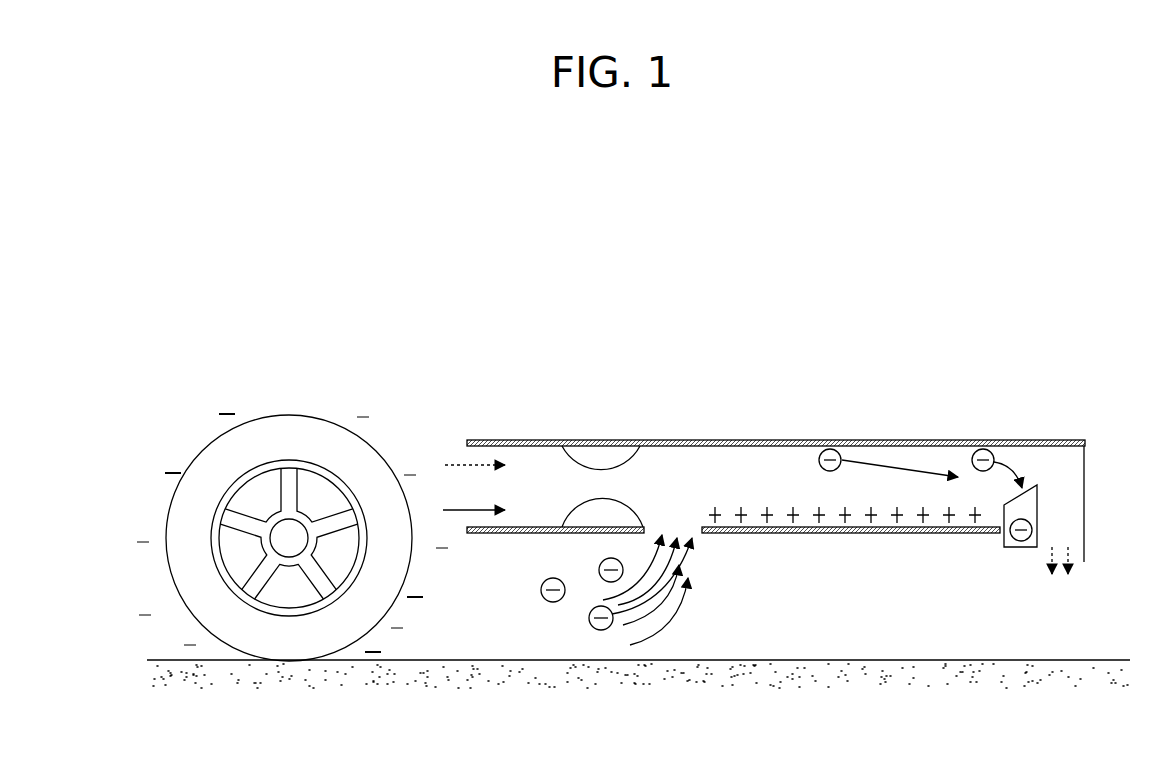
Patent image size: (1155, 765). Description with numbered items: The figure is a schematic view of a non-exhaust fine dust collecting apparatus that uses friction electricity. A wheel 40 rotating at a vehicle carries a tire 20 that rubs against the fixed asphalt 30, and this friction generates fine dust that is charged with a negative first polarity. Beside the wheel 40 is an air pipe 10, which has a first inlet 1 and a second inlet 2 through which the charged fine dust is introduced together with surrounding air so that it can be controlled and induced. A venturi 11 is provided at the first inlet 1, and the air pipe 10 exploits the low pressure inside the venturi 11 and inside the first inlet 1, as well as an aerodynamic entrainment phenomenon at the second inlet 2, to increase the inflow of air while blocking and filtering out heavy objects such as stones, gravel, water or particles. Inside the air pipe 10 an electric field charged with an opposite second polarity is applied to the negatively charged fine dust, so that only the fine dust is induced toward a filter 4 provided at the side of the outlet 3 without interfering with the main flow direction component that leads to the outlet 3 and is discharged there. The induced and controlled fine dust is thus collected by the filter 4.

The first inlet 1 is at (459, 482).
The second inlet 2 is at (688, 528).
The outlet 3 is at (1062, 540).
The filter 4 is at (1033, 487).
The air pipe 10 is at (993, 440).
The venturi 11 is at (600, 485).
The tire 20 is at (187, 505).
The asphalt 30 is at (178, 680).
The wheel 40 is at (268, 385).